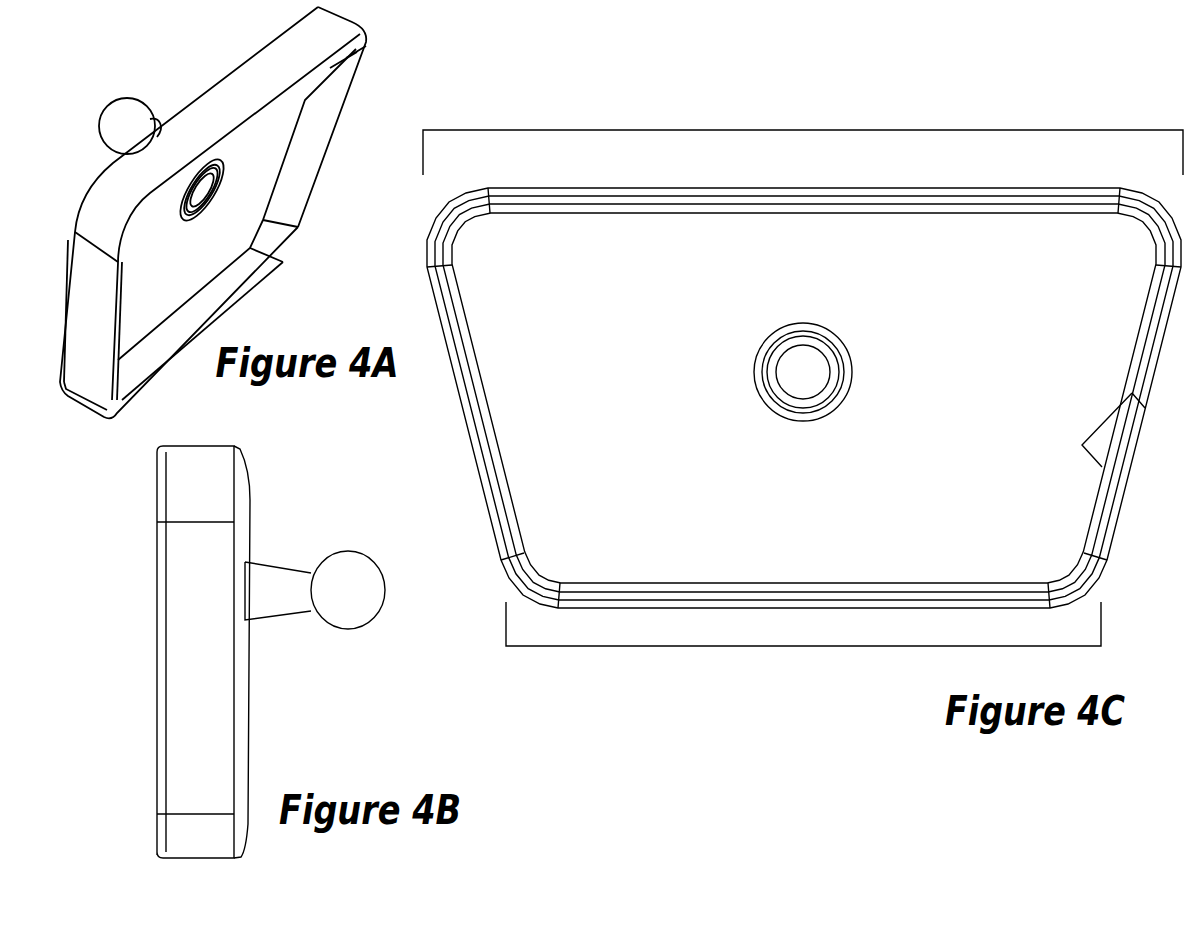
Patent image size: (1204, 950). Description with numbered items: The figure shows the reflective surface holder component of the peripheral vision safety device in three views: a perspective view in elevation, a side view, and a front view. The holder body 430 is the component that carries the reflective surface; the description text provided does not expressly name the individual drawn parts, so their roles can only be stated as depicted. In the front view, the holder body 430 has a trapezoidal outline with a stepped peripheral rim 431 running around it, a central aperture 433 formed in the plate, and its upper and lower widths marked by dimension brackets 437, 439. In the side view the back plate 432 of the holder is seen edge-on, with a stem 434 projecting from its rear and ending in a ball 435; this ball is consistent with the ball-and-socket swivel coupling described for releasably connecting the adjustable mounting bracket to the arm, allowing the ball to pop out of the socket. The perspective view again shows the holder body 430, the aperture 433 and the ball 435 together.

In FIG. 4A, the mounting plate / holder body 430 is at (176, 279).
In FIG. 4B, the mounting plate / holder body 430 is at (302, 652).
In FIG. 4C, the mounting plate / holder body 430 is at (607, 314).
In FIG. 4C, the peripheral rim side wall 431 is at (1101, 412).
In FIG. 4B, the back plate 432 is at (214, 693).
In FIG. 4A, the central aperture 433 is at (210, 188).
In FIG. 4C, the central aperture 433 is at (777, 372).
In FIG. 4B, the stem / neck 434 is at (291, 602).
In FIG. 4A, the ball 435 is at (128, 97).
In FIG. 4B, the ball 435 is at (381, 615).
In FIG. 4C, the top width dimension 437 is at (803, 130).
In FIG. 4C, the bottom width dimension 439 is at (803, 646).